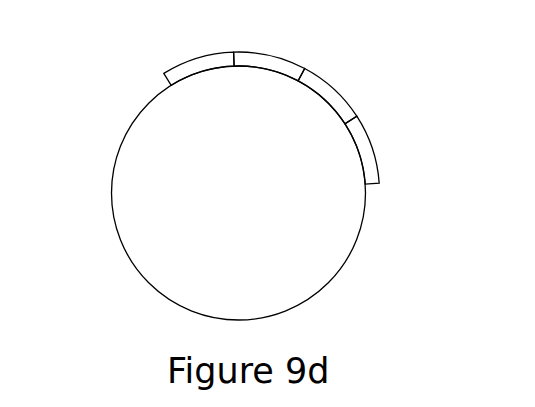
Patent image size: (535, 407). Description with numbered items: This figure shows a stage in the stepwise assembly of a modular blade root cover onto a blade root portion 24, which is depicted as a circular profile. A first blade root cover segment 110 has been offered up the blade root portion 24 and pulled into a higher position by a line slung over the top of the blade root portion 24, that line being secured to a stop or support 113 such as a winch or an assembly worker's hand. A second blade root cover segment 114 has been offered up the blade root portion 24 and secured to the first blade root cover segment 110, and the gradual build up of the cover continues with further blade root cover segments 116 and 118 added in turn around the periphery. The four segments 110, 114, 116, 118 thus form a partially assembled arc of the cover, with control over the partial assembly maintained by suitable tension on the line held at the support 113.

The blade root portion 24 is at (358, 238).
The blade root cover segment 110 is at (190, 60).
The stop or support 113 is at (248, 146).
The second blade root cover segment 114 is at (280, 58).
The blade root cover segment 116 is at (343, 95).
The blade root cover segment 118 is at (373, 156).